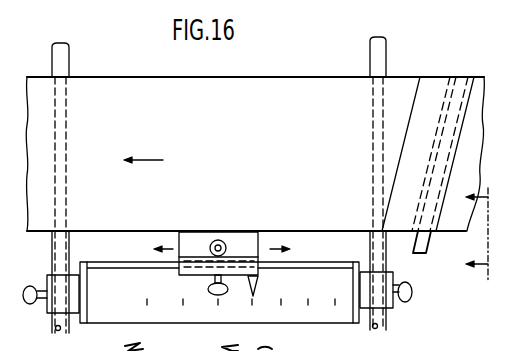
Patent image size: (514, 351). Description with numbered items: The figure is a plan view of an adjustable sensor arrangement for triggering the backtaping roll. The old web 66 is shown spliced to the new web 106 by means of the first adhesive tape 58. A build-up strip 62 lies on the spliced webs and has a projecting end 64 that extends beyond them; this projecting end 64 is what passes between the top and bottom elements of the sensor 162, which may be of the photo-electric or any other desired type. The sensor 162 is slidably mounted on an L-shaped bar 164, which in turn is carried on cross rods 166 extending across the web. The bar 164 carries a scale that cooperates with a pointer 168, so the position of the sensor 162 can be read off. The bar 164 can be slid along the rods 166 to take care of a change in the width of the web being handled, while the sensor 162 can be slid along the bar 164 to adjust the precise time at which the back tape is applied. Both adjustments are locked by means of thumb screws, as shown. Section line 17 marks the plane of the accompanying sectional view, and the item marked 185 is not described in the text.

The old web 66 is at (264, 77).
The first adhesive tape 58 is at (430, 77).
The new web 106 is at (482, 77).
The build-up strip 62 is at (470, 147).
The projecting end 64 is at (424, 241).
The sensor 162 is at (270, 231).
The L-shaped bar 164 is at (310, 268).
The cross rods 166 is at (60, 331).
The pointer 168 is at (257, 285).
The indicator 185 is at (295, 345).
The section line 17- 17 is at (488, 234).